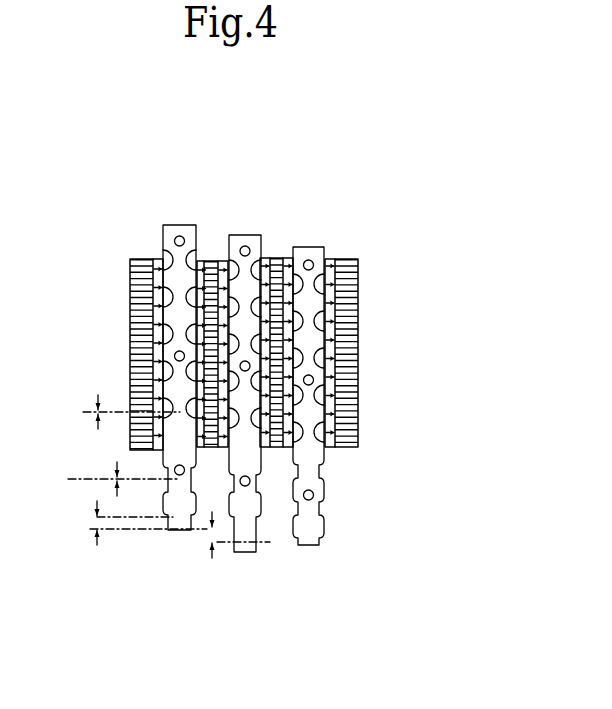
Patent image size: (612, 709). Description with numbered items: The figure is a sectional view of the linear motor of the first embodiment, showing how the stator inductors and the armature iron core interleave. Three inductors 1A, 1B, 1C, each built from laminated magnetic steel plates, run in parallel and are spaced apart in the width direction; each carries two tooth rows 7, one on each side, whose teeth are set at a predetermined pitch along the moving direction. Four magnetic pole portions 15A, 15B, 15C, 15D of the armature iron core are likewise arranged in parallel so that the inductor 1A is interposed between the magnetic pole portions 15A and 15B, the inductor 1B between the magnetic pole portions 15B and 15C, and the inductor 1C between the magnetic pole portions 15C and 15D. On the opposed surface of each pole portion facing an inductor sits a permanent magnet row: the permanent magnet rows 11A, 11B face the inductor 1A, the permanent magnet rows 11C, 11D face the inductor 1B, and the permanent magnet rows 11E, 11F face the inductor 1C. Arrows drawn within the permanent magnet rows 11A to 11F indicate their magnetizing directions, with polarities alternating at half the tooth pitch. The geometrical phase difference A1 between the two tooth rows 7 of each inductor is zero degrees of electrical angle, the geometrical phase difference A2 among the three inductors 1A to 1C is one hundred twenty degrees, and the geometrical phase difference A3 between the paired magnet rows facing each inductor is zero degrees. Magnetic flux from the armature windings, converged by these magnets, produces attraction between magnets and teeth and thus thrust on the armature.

The inductor 1A is at (168, 228).
The inductor 1B is at (243, 235).
The inductor 1C is at (311, 247).
The tooth row 7 is at (233, 240).
The permanent magnet row 11A is at (165, 447).
The permanent magnet row 11B is at (200, 447).
The permanent magnet row 11C is at (223, 447).
The permanent magnet row 11D is at (266, 447).
The permanent magnet row 11E is at (287, 447).
The permanent magnet row 11F is at (330, 447).
The magnetic pole portion 15A is at (131, 305).
The magnetic pole portion 15B is at (205, 261).
The magnetic pole portion 15C is at (275, 258).
The magnetic pole portion 15D is at (359, 272).
The geometrical phase difference between the two tooth rows A1 is at (124, 479).
The geometrical phase difference among the three inductors A2 is at (154, 537).
The geometrical phase difference between two magnet rows A3 is at (117, 412).